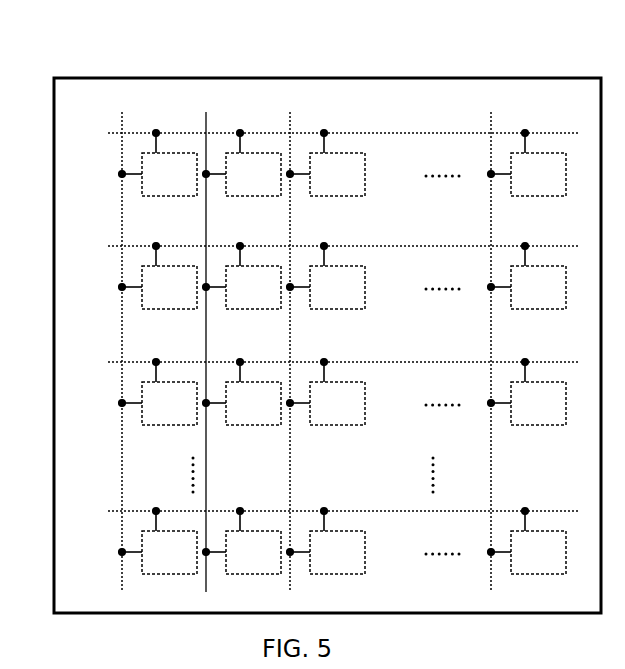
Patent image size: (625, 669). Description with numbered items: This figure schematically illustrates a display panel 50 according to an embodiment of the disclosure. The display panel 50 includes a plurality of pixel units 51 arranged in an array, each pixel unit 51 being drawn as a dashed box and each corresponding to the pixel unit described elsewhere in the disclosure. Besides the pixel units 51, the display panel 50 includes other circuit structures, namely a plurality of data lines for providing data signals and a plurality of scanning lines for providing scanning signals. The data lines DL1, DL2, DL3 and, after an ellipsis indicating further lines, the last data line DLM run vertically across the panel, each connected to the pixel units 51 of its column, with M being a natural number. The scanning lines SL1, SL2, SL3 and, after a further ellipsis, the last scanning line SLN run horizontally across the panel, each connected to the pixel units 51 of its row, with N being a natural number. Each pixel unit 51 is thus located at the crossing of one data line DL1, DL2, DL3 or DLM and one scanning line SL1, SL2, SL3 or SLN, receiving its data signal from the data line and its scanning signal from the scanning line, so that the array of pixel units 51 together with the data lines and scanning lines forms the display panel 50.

The display panel 50 is at (51, 47).
The pixel unit 51 is at (342, 352).
The data line DL1 is at (128, 338).
The data line DL2 is at (209, 338).
The data line DL3 is at (292, 338).
The data line DLM is at (493, 338).
The scanning line SL1 is at (325, 134).
The scanning line SL2 is at (325, 247).
The scanning line SL3 is at (325, 363).
The scanning line SLN is at (325, 529).